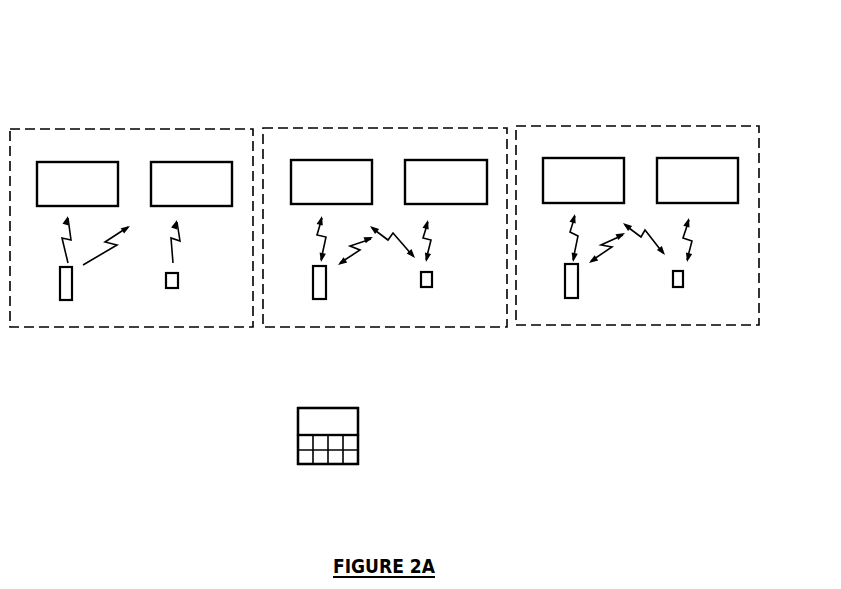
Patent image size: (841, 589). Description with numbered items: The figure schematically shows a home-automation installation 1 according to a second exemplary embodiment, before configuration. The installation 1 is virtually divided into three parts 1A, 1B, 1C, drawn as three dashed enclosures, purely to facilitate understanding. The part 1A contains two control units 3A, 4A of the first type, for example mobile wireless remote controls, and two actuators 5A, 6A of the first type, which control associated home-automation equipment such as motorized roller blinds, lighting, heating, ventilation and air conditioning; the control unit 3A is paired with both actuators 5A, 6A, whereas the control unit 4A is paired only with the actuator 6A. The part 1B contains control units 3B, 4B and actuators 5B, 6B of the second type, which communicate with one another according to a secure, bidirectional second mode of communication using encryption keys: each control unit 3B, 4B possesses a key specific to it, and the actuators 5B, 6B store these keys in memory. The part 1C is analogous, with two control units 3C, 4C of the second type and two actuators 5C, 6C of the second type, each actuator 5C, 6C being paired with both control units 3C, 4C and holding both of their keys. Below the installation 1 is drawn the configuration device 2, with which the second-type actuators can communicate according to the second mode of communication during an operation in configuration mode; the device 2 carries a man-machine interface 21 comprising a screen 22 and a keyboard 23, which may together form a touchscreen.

The home-automation installation 1 is at (479, 112).
The part of the home-automation installation 1A is at (110, 331).
The part of the home-automation installation 1B is at (411, 329).
The part of the home-automation installation 1C is at (663, 327).
The control unit 3A is at (60, 289).
The control unit 3B is at (313, 289).
The control unit 3C is at (565, 287).
The control unit 4A is at (178, 280).
The control unit 4B is at (432, 279).
The control unit 4C is at (683, 278).
The actuator 5A is at (68, 162).
The actuator 5B is at (322, 160).
The actuator 5C is at (572, 158).
The actuator 6A is at (180, 162).
The actuator 6B is at (433, 160).
The actuator 6C is at (685, 158).
The configuration device 2 is at (361, 430).
The man-machine interface 21 is at (298, 426).
The screen 22 is at (322, 420).
The keyboard 23 is at (347, 455).